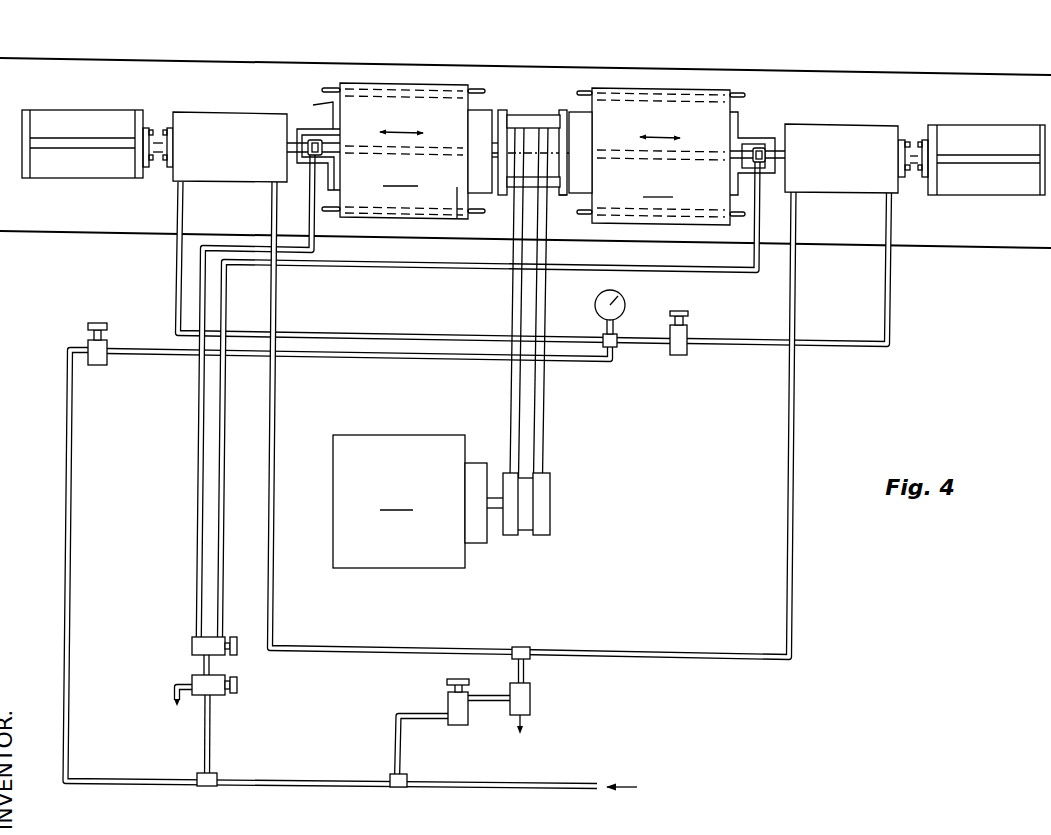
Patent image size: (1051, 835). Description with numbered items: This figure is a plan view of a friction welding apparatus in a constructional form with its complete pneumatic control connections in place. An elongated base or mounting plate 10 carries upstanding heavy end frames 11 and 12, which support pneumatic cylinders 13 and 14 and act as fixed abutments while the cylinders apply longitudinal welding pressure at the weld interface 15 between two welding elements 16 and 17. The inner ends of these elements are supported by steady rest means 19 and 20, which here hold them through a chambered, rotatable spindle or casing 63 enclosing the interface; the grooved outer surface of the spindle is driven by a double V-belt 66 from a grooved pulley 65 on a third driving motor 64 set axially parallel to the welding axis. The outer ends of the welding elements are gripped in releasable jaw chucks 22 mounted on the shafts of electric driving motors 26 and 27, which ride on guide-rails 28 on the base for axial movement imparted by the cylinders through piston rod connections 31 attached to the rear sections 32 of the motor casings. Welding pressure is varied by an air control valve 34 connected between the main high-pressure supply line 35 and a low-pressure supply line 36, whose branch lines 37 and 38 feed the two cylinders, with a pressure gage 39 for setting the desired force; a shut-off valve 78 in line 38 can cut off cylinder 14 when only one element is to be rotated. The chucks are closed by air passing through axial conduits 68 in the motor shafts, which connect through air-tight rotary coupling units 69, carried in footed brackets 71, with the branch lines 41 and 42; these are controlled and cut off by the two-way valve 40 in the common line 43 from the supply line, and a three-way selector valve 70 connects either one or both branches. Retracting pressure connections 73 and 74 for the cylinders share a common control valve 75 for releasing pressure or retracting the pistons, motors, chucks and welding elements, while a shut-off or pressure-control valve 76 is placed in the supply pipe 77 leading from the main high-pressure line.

The base or mounting plate 10 is at (433, 62).
The end frame or bracket 11 is at (70, 110).
The end frame or bracket 12 is at (1013, 135).
The pneumatic or air cylinder 13 is at (188, 120).
The pneumatic or air cylinder 14 is at (885, 130).
The weld zone or interface 15 is at (532, 150).
The welding specimen or structural element 16 is at (500, 110).
The welding specimen or structural element 17 is at (563, 190).
The steady rest means 19 is at (511, 110).
The steady rest means 20 is at (563, 110).
The releasable jaw chuck 22 is at (598, 115).
The electric driving motor 26 is at (416, 151).
The electric driving motor 27 is at (649, 156).
The guide-rails or ways 28 is at (477, 89).
The piston rod connection 31 is at (292, 133).
The rear section of motor casing 32 is at (314, 103).
The air control valve 34 is at (100, 360).
The main high-pressure air supply line 35 is at (437, 788).
The low-pressure supply line 36 is at (355, 356).
The branch line 37 is at (178, 282).
The branch line 38 is at (893, 290).
The pressure gage 39 is at (622, 307).
The controlling valve 40 is at (207, 688).
The branch line 41 is at (200, 311).
The branch line 42 is at (385, 268).
The common branch line or pipe 43 is at (203, 663).
The rotatable spindle or casing 63 is at (532, 208).
The third driving motor 64 is at (418, 501).
The grooved driving pulley 65 is at (530, 502).
The double V-belt 66 is at (538, 381).
The axial air conduit 68 is at (362, 147).
The air-tight rotary coupling unit 69 is at (312, 155).
The three-way selector valve 70 is at (200, 645).
The footed bracket 71 is at (308, 129).
The retracting pressure-applying connection 73 is at (277, 300).
The retracting pressure-applying connection 74 is at (797, 307).
The common control valve 75 is at (520, 700).
The shut-off or pressure-control valve 76 is at (458, 702).
The pipe or supply line 77 is at (488, 700).
The shut-off valve 78 is at (680, 350).